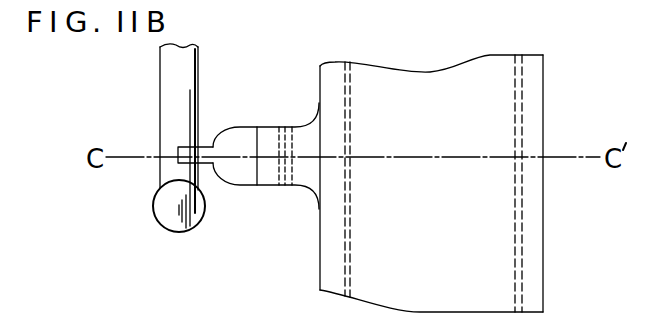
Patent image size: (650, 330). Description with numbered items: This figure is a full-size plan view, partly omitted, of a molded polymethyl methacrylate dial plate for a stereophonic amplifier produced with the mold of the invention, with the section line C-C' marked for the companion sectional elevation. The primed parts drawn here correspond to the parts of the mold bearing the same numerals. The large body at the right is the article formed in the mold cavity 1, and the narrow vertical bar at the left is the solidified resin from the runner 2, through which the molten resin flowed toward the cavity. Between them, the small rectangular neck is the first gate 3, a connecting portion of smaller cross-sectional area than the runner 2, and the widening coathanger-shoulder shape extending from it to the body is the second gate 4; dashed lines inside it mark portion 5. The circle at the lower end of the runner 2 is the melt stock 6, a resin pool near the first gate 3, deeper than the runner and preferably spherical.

The mold cavity 1 is at (505, 92).
The runner 2 is at (164, 70).
The first gate 3 is at (203, 165).
The second gate 4 is at (267, 176).
The bore / channel (dashed) 5 is at (306, 82).
The melt stock 6 is at (167, 217).